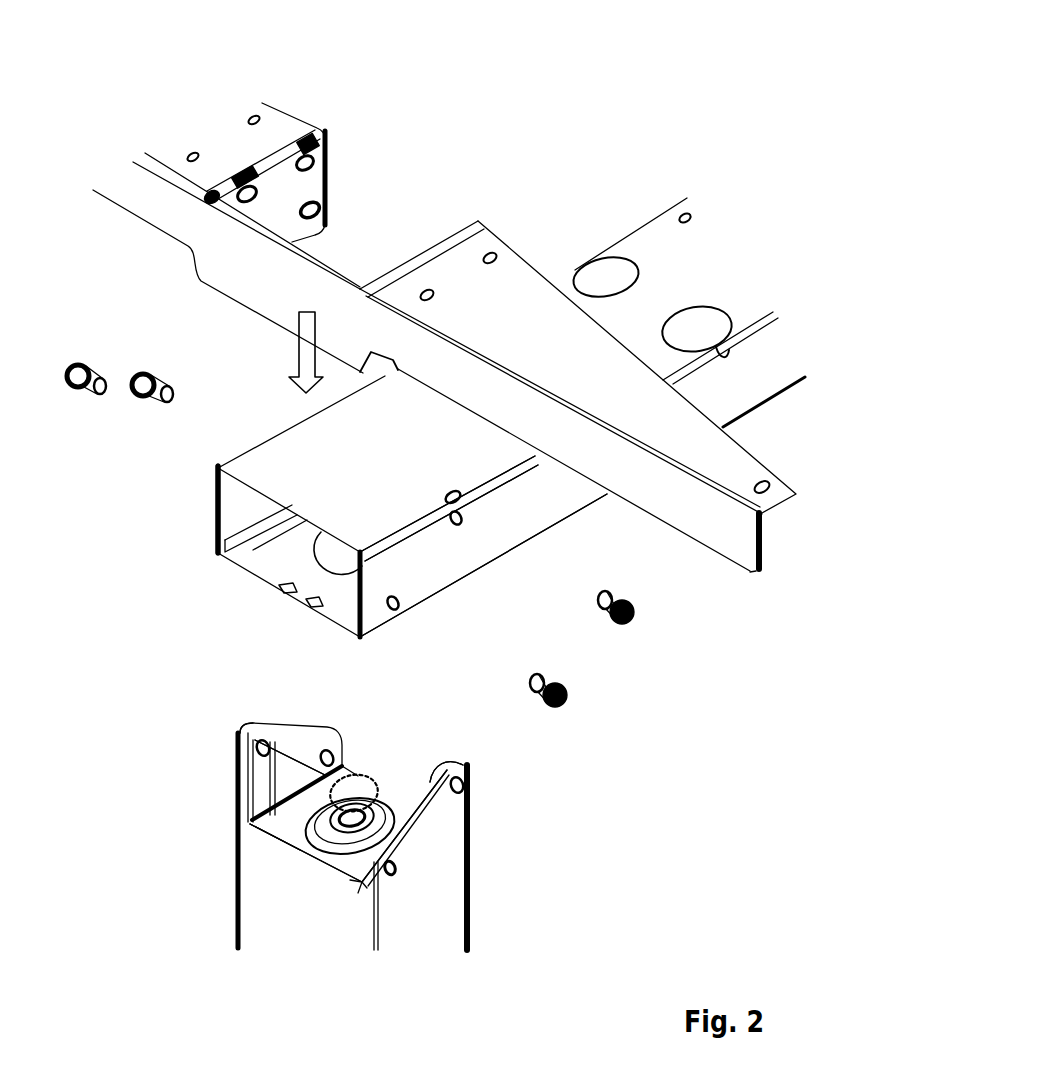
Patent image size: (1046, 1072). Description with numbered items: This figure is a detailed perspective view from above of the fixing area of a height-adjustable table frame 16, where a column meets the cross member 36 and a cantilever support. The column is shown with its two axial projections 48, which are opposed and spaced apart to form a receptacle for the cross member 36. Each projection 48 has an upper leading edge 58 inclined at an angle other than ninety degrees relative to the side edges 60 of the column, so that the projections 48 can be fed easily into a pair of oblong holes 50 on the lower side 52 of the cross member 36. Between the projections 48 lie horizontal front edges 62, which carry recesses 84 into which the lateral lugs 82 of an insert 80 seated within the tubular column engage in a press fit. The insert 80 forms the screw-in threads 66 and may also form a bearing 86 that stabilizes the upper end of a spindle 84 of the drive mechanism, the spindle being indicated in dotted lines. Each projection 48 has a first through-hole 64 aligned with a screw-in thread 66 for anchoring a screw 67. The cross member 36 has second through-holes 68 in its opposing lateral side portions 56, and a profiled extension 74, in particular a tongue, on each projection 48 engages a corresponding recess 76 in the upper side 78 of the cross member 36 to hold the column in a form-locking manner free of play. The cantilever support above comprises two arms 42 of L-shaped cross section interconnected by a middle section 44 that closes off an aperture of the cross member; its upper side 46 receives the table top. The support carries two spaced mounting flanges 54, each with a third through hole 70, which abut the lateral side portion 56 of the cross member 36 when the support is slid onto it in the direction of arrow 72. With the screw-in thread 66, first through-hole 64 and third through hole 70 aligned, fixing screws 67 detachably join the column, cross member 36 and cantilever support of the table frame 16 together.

The table frame 16 is at (643, 124).
The cross member 36 is at (303, 452).
The arms 42 is at (276, 120).
The middle section 44 is at (266, 301).
The upper side 46 is at (504, 308).
The axial projections 48 is at (243, 737).
The oblong holes 50 is at (276, 534).
The lower side 52 is at (284, 553).
The mounting flange 54 is at (415, 251).
The lateral side portion 56 is at (220, 480).
The upper edge 58 is at (277, 750).
The side edges 60 is at (234, 798).
The front edges 62 is at (306, 860).
The first through-hole 64 is at (467, 786).
The screw-in thread 66 is at (281, 760).
The screw 67 is at (153, 380).
The second through-hole 68 is at (467, 517).
The third through hole 70 is at (288, 200).
The arrow 72 is at (305, 368).
The profiled extension 74 is at (245, 737).
The recess 76 is at (255, 456).
The upper side 78 is at (713, 287).
The insert 80 is at (262, 840).
The lateral lugs 82 is at (338, 882).
The spindle 84 is at (260, 833).
The bearing 86 is at (360, 776).